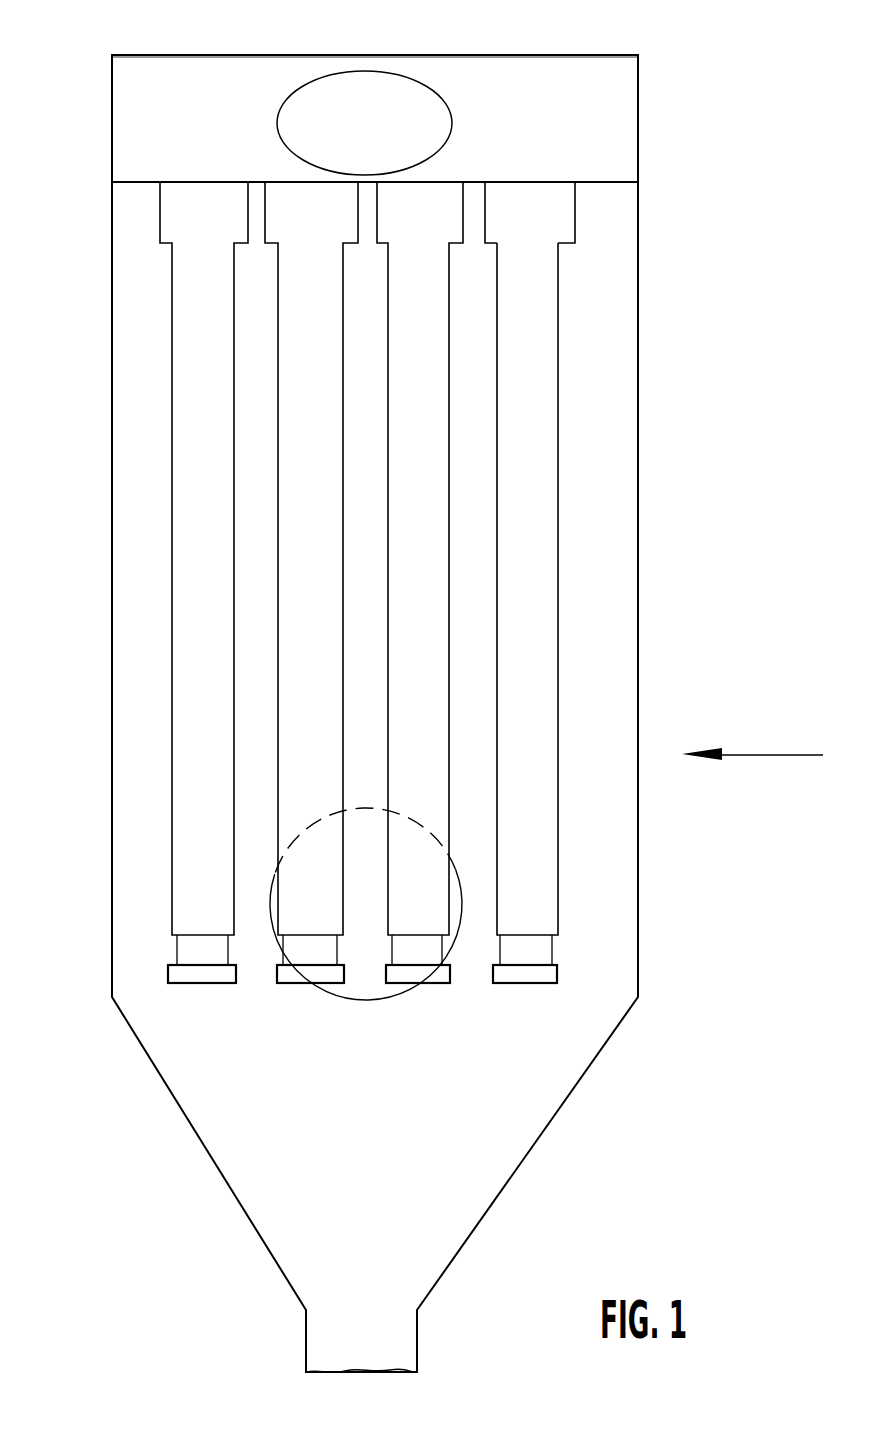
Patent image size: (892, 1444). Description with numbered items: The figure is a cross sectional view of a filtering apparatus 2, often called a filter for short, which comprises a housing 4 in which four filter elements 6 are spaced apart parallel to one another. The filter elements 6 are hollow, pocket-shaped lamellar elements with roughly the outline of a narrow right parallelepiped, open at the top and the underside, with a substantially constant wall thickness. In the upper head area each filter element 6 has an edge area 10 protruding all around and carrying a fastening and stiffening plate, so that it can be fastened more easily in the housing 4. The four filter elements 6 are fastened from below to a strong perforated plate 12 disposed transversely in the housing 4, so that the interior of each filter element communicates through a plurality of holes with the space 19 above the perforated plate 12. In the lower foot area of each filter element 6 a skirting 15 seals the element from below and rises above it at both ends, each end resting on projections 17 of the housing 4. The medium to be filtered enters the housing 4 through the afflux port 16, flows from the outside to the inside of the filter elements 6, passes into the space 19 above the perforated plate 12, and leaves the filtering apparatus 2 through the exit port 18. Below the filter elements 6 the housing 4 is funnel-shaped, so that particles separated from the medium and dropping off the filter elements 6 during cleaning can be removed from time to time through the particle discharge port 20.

The filtering apparatus 2 is at (252, 38).
The housing 4 is at (112, 230).
The filter element 6 is at (538, 618).
The edge area 10 is at (565, 218).
The perforated plate 12 is at (608, 183).
The skirting 15 is at (535, 957).
The afflux port 16 is at (358, 987).
The projections 17 is at (442, 977).
The exit port 18 is at (402, 98).
The space 19 is at (592, 72).
The particle discharge port 20 is at (318, 1333).